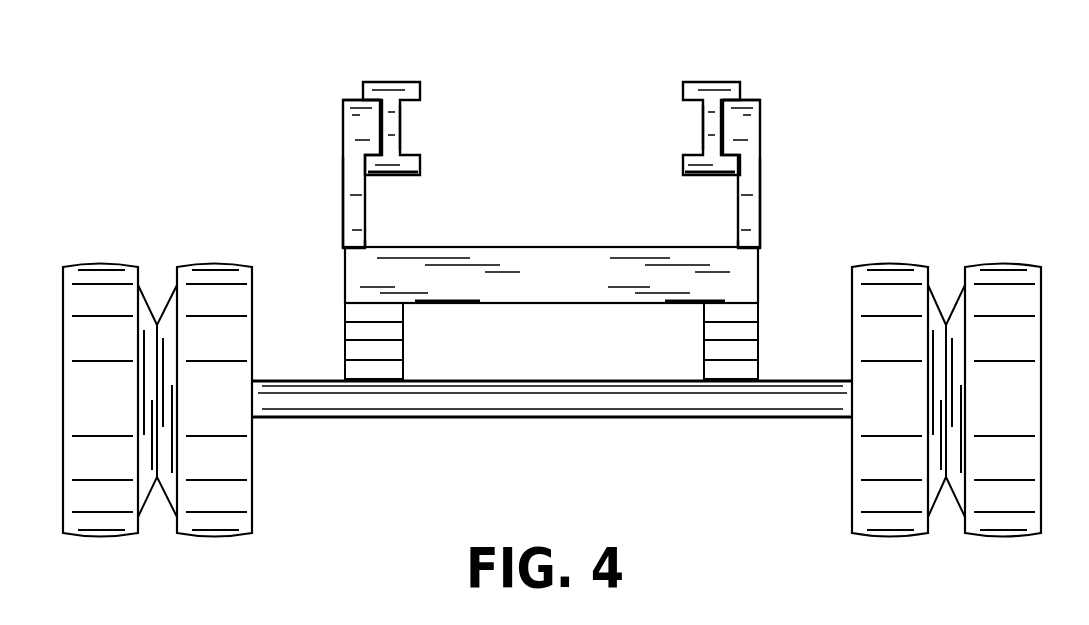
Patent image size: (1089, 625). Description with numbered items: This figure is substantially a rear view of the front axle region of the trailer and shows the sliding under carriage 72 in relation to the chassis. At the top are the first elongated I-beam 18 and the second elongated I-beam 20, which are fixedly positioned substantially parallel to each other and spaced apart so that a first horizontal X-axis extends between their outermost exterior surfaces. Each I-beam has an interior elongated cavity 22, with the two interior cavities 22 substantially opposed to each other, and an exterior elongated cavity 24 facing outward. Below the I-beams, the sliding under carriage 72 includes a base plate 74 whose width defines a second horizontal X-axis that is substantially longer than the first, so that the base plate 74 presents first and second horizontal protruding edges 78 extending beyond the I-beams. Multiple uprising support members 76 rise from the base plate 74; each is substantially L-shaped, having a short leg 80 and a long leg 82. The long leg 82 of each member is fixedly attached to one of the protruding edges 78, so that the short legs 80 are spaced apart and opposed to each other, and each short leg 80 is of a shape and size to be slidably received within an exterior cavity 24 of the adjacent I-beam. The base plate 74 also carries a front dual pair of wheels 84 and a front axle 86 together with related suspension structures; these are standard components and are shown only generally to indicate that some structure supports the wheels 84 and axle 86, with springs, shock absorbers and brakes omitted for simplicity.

The first elongated I-beam 18 is at (710, 82).
The second elongated I-beam 20 is at (398, 82).
The interior elongated cavity 22 is at (410, 132).
The exterior elongated cavity 24 is at (360, 98).
The sliding under carriage 72 is at (553, 288).
The base plate 74 is at (552, 252).
The uprising support members 76 is at (352, 168).
The horizontal protruding edges 78 is at (364, 248).
The short leg 80 is at (355, 125).
The long leg 82 is at (346, 247).
The front dual pair of wheels 84 is at (126, 535).
The front axle 86 is at (560, 402).